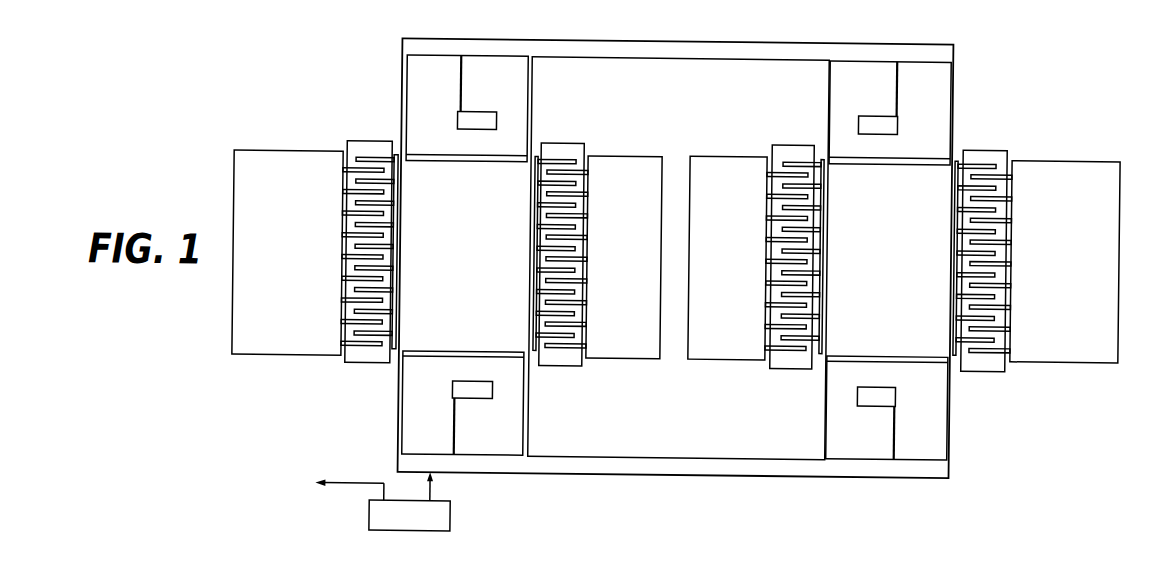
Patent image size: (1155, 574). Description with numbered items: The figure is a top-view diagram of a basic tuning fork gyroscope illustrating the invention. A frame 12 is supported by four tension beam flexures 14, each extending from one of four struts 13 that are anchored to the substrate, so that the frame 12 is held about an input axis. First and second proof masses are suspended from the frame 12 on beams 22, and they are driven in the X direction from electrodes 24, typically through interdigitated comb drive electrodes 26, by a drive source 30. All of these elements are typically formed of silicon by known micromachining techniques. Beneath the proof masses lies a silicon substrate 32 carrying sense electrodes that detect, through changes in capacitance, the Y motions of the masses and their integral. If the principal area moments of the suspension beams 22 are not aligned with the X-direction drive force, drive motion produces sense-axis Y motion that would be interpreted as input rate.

The frame 12 is at (655, 42).
The strut 13 is at (456, 122).
The tension beam flexure 14 is at (459, 72).
The beam 22 is at (400, 76).
The electrode 24 is at (1052, 157).
The interdigitated comb drive electrode 26 is at (367, 374).
The drive source 30 is at (453, 513).
The silicon substrate 32 is at (688, 140).